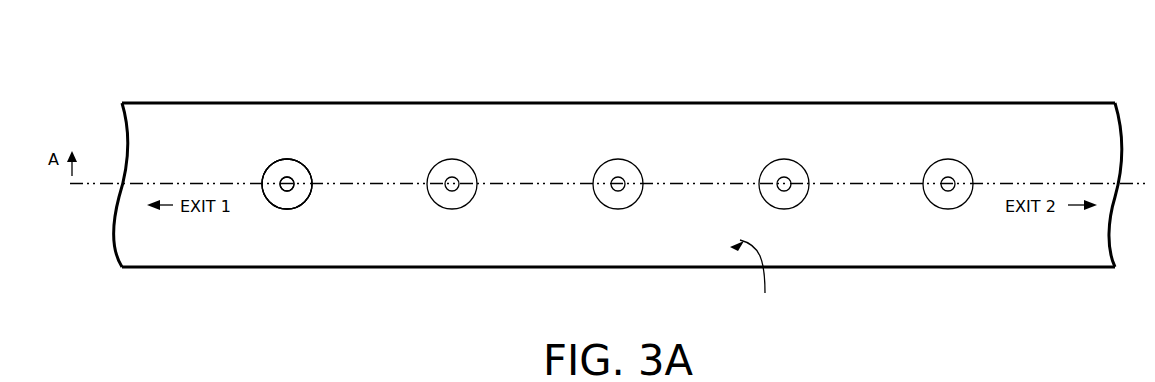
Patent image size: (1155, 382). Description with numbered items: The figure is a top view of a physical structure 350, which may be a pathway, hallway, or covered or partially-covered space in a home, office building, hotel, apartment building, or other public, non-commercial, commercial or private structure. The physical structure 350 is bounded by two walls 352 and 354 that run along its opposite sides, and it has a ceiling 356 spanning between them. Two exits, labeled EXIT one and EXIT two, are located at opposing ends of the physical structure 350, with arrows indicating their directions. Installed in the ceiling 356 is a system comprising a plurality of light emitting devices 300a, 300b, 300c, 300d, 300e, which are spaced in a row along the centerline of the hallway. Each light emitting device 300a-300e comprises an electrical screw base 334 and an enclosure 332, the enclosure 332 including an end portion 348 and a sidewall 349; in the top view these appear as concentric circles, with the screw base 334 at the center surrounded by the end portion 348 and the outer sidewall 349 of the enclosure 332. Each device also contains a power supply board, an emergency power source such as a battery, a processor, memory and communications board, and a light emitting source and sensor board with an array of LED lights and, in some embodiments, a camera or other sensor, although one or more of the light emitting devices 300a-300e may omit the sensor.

The light emitting device 300a is at (287, 148).
The light emitting device 300b is at (452, 145).
The light emitting device 300c is at (618, 145).
The light emitting device 300d is at (784, 145).
The light emitting device 300e is at (948, 145).
The enclosure 332 is at (322, 198).
The electrical screw base 334 is at (281, 178).
The end portion 348 is at (303, 173).
The sidewall 349 is at (273, 208).
The physical structure 350 is at (618, 168).
The wall 352 is at (688, 101).
The wall 354 is at (533, 268).
The ceiling 356 is at (754, 277).